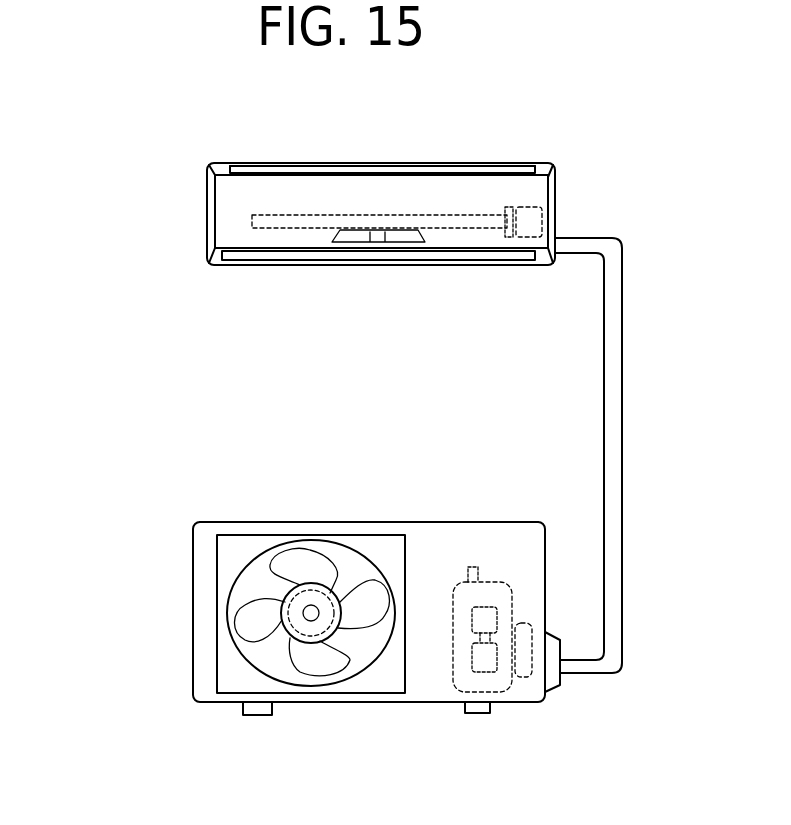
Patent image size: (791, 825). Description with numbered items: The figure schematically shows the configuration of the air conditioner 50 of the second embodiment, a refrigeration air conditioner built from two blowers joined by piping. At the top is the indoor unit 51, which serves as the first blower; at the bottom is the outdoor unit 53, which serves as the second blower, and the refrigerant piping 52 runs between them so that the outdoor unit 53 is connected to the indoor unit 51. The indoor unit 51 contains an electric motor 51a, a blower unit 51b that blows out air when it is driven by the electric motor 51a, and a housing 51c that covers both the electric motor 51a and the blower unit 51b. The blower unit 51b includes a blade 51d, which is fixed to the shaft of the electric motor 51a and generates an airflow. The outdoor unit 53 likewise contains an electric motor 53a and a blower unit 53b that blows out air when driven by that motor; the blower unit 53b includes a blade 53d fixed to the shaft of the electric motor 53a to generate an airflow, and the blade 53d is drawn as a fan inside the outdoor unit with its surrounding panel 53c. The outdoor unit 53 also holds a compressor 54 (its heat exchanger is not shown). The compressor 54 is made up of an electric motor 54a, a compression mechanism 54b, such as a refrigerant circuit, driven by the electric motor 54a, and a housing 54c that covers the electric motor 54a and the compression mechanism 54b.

The air conditioner 50 is at (86, 150).
The indoor unit 51 is at (258, 140).
The electric motor 51a is at (543, 219).
The blower unit 51b is at (252, 218).
The housing 51c is at (375, 163).
The blade 51d is at (511, 238).
The refrigerant piping 52 is at (622, 397).
The outdoor unit 53 is at (263, 478).
The electric motor 53a is at (312, 640).
The blower unit 53b is at (217, 578).
The outdoor unit casing 53c is at (370, 522).
The blade 53d is at (247, 620).
The compressor 54 is at (440, 582).
The electric motor 54a is at (484, 617).
The compression mechanism 54b is at (482, 658).
The housing 54c is at (458, 687).